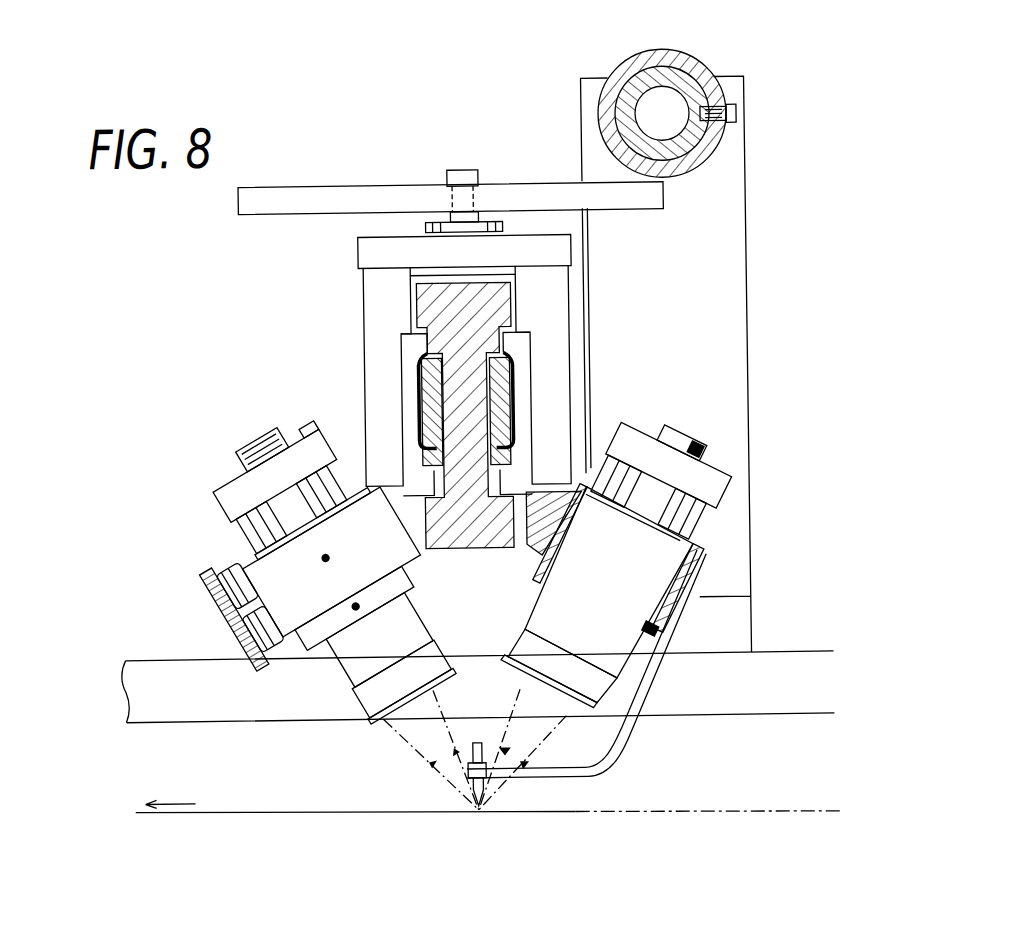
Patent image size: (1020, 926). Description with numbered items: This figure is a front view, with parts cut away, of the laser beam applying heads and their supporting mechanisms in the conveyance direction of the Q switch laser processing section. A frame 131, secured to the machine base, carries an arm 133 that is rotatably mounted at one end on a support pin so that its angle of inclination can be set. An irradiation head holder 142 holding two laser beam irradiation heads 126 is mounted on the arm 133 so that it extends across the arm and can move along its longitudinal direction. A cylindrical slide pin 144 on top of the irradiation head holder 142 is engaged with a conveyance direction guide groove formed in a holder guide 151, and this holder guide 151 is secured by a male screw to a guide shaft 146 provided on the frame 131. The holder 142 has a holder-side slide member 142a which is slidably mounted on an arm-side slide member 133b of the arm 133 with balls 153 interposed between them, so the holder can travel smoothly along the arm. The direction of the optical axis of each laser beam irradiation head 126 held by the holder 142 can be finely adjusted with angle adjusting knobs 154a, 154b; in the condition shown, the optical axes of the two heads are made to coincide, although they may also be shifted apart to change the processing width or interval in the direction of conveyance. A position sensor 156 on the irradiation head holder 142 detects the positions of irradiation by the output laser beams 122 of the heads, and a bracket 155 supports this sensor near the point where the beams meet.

The output laser beams 122 is at (420, 804).
The laser beam irradiation head 126 is at (341, 658).
The frame 131 is at (775, 693).
The arm 133 is at (428, 300).
The arm-side slide member 133b is at (420, 357).
The irradiation head holder 142 is at (366, 256).
The holder-side slide member 142a is at (416, 414).
The slide pin 144 is at (466, 170).
The guide shaft 146 is at (652, 65).
The holder guide 151 is at (339, 185).
The balls 153 is at (424, 344).
The angle adjusting knob 154a is at (210, 580).
The angle adjusting knob 154b is at (230, 627).
The bracket 155 is at (557, 776).
The position sensor 156 is at (515, 767).